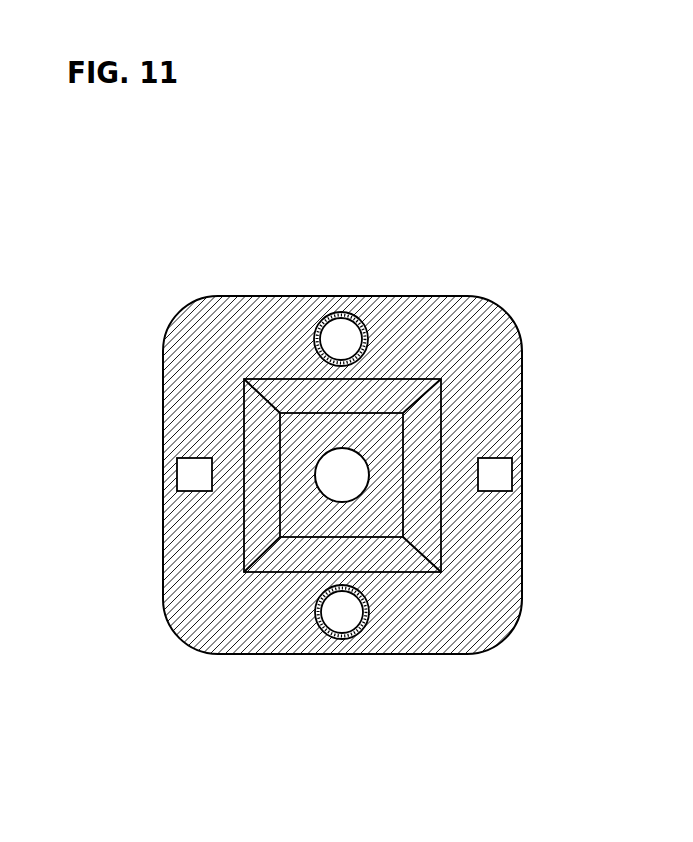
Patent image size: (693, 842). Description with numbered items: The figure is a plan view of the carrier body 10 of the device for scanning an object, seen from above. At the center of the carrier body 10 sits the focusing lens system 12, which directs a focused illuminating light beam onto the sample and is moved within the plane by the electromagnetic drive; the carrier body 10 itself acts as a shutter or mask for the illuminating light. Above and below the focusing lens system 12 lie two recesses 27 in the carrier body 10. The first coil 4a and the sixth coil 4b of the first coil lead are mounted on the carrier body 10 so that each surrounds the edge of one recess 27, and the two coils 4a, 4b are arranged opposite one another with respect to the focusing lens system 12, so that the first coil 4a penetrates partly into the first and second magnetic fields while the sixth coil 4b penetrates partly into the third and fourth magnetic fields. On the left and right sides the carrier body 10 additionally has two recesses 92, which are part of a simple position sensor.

The carrier body 10 is at (455, 298).
The focusing lens system 12 is at (339, 448).
The recess 27 is at (333, 339).
The first coil 4a is at (348, 312).
The sixth coil 4b is at (316, 614).
The recess 92 is at (178, 464).